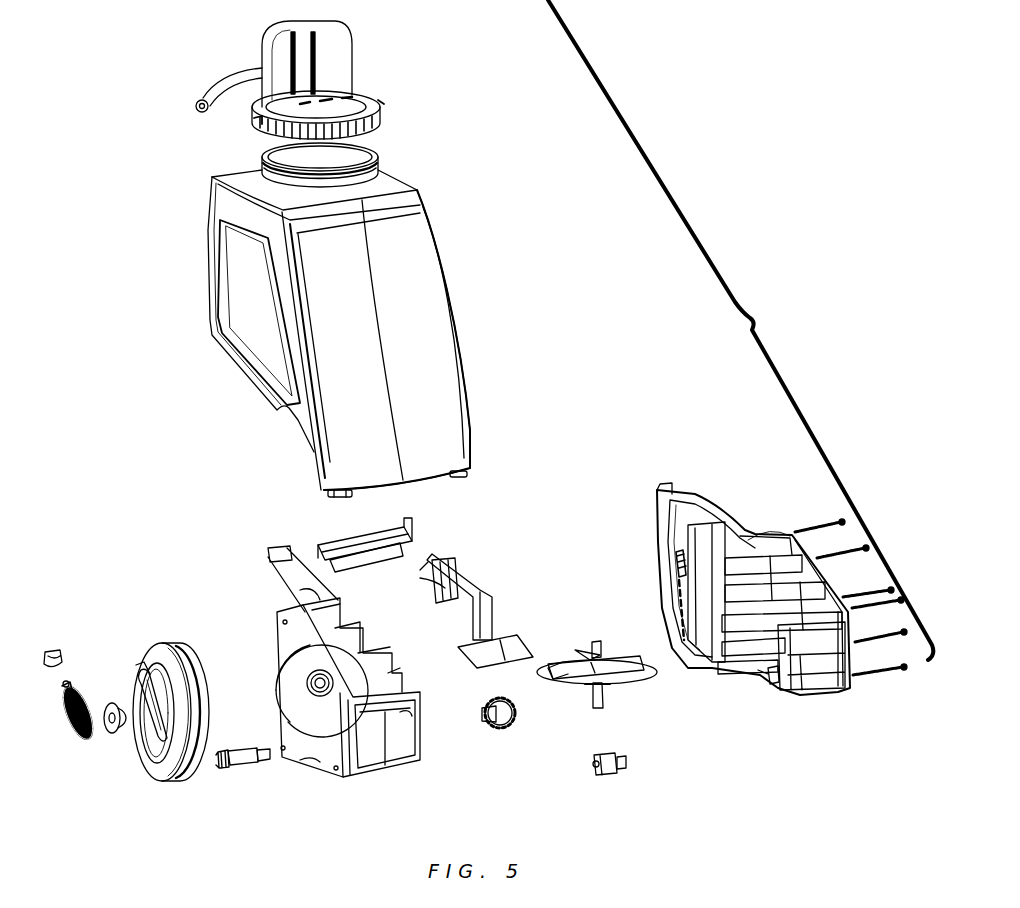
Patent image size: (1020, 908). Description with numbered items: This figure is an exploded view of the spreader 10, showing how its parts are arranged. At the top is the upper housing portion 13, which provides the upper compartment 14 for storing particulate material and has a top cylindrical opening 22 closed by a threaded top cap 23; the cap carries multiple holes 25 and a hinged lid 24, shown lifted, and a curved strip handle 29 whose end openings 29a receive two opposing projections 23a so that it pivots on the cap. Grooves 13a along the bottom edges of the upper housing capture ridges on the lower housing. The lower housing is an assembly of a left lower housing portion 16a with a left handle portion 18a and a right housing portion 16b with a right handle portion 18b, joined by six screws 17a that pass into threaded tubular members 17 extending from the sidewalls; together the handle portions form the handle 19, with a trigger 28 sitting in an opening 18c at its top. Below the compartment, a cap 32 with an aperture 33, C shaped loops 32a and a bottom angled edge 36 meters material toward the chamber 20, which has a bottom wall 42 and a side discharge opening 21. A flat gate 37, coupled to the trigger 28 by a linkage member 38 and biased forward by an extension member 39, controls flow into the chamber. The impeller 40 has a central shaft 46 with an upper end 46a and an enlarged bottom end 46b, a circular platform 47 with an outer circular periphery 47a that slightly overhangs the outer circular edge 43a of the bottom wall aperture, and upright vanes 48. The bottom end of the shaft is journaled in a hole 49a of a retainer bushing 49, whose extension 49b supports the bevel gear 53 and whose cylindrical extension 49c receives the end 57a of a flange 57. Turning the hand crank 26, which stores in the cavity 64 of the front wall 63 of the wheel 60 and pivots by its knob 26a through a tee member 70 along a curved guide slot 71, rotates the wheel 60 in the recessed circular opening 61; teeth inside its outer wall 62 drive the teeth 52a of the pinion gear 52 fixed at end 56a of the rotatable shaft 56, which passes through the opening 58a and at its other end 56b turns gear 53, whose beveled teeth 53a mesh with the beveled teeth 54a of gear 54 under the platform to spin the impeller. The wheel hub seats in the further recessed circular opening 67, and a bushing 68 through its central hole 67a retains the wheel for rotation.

The spreader 10 is at (748, 318).
The upper housing portion 13 is at (347, 411).
The grooves 13a is at (468, 470).
The upper compartment 14 is at (432, 320).
The left lower housing portion 16a is at (563, 714).
The right housing portion 16b is at (750, 597).
The threaded tubular members 17 is at (765, 528).
The screws 17a is at (830, 520).
The left handle portion 18a is at (266, 553).
The right handle portion 18b is at (700, 478).
The opening of handle housing portion 18c is at (318, 592).
The handle 19 is at (670, 580).
The chamber 20 is at (846, 664).
The side discharge opening 21 is at (378, 725).
The top cylindrical opening 22 is at (352, 157).
The top cap 23 is at (383, 122).
The projections 23a is at (255, 122).
The lid 24 is at (355, 52).
The holes 25 is at (342, 100).
The hand crank 26 is at (58, 724).
The knob 26a is at (60, 688).
The trigger 28 is at (434, 600).
The handle 29 is at (252, 72).
The openings 29a is at (196, 104).
The cap 32 is at (380, 531).
The C shaped loops 32a is at (322, 540).
The aperture 33 is at (372, 532).
The bottom angled edge 36 is at (370, 570).
The gate 37 is at (500, 652).
The linkage member 38 is at (480, 586).
The extension member 39 is at (418, 598).
The impeller 40 is at (650, 672).
The bottom wall 42 is at (826, 690).
The outer circular edge 43a is at (412, 716).
The central shaft 46 is at (608, 668).
The upper end of shaft 46a is at (600, 645).
The bottom end of shaft 46b is at (592, 705).
The circular platform 47 is at (552, 665).
The outer circular periphery 47a is at (544, 676).
The vanes 48 is at (565, 655).
The retainer bushing 49 is at (605, 766).
The hole 49a is at (608, 755).
The extension 49b is at (592, 766).
The cylindrical extension 49c is at (628, 764).
The pinion gear 52 is at (235, 760).
The teeth 52a is at (226, 769).
The gear 53 is at (484, 720).
The beveled teeth 53a is at (498, 698).
The gear 54 is at (612, 686).
The beveled teeth 54a is at (604, 700).
The rotatable shaft 56 is at (236, 756).
The end of shaft 56a is at (222, 764).
The other end of shaft 56b is at (268, 762).
The flange 57 is at (772, 684).
The end of flange 57a is at (756, 676).
The opening 58a is at (310, 760).
The wheel 60 is at (160, 712).
The recessed circular opening 61 is at (288, 418).
The outer wall 62 is at (186, 646).
The front wall 63 is at (160, 770).
The cavity 64 is at (156, 740).
The further recessed circular opening 67 is at (310, 680).
The central hole 67a is at (335, 678).
The bushing 68 is at (108, 702).
The tee member 70 is at (50, 650).
The curved guide slot 71 is at (139, 662).